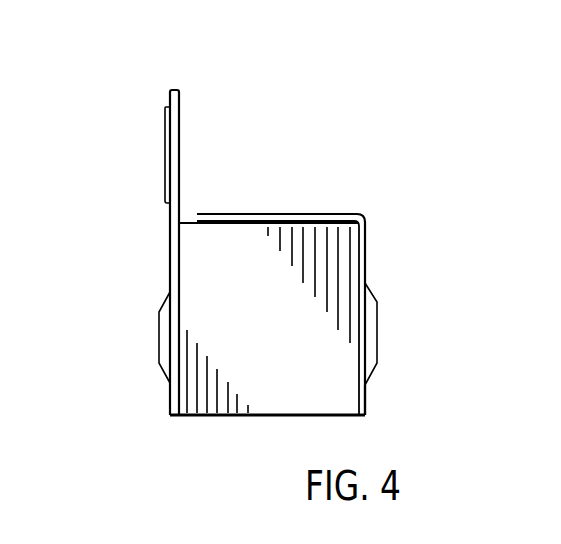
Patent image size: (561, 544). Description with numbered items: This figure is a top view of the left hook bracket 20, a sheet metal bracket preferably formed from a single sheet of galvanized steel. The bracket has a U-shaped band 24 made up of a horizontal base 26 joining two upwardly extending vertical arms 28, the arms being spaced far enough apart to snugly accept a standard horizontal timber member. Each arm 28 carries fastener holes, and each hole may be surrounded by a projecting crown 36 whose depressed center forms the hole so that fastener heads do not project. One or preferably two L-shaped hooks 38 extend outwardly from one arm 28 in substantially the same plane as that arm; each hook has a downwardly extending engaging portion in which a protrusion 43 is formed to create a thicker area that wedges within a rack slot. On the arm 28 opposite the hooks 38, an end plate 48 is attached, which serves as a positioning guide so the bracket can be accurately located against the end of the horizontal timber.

The left hook bracket 20 is at (351, 182).
The U-shaped band 24 is at (367, 401).
The horizontal base 26 is at (273, 418).
The vertical arm 28 is at (170, 252).
The projecting crown 36 is at (159, 357).
The L-shaped hook 38 is at (170, 98).
The protrusion 43 is at (165, 134).
The end plate 48 is at (272, 213).